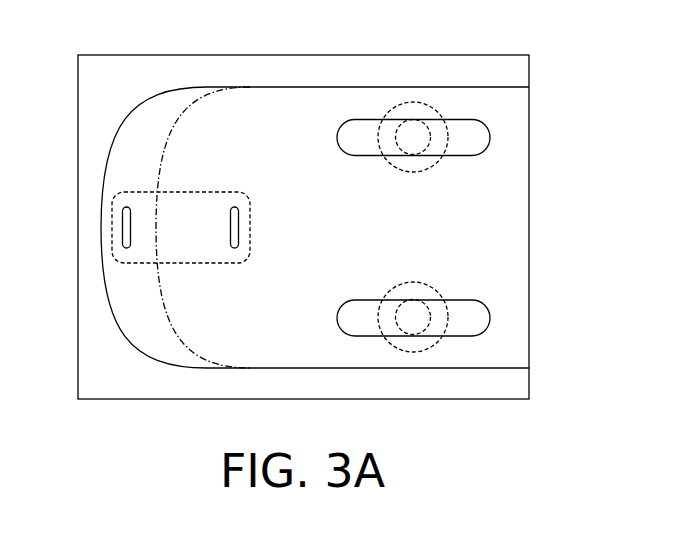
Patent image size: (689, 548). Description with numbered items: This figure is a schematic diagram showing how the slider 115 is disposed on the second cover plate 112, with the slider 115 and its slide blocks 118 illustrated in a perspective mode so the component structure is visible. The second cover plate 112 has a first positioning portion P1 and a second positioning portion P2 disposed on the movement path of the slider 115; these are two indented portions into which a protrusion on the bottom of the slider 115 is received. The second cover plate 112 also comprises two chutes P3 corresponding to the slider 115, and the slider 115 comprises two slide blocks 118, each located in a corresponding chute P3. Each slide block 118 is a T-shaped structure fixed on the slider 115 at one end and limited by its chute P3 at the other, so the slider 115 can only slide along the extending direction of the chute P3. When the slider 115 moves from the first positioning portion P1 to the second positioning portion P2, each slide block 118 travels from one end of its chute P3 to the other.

The second cover plate 112 is at (137, 67).
The slider 115 is at (313, 100).
The slide block 118 is at (413, 102).
The first positioning portion P1 is at (123, 229).
The second positioning portion P2 is at (222, 232).
The chute P3 is at (490, 137).